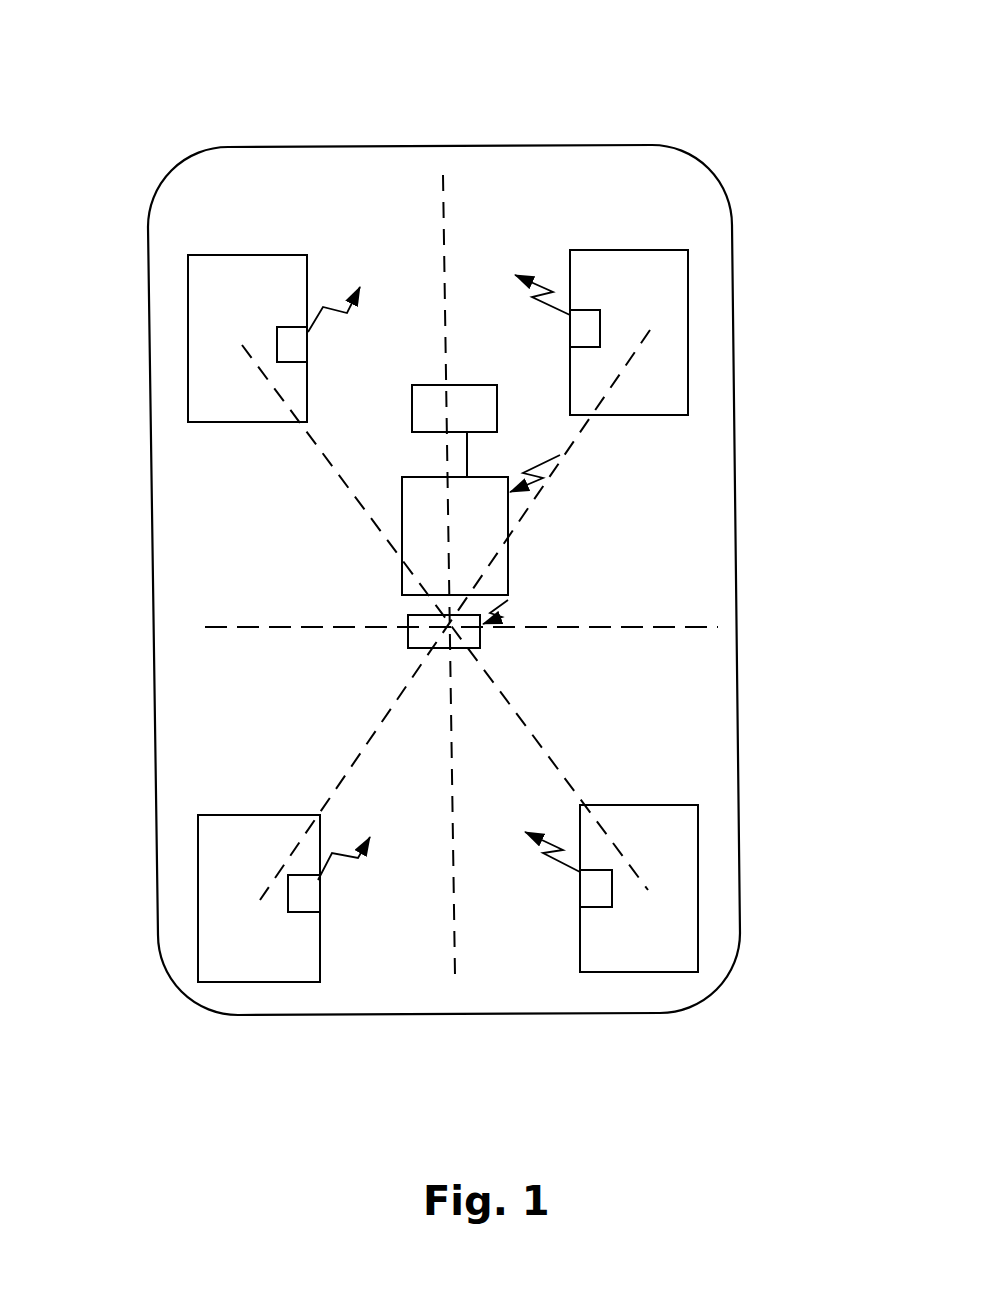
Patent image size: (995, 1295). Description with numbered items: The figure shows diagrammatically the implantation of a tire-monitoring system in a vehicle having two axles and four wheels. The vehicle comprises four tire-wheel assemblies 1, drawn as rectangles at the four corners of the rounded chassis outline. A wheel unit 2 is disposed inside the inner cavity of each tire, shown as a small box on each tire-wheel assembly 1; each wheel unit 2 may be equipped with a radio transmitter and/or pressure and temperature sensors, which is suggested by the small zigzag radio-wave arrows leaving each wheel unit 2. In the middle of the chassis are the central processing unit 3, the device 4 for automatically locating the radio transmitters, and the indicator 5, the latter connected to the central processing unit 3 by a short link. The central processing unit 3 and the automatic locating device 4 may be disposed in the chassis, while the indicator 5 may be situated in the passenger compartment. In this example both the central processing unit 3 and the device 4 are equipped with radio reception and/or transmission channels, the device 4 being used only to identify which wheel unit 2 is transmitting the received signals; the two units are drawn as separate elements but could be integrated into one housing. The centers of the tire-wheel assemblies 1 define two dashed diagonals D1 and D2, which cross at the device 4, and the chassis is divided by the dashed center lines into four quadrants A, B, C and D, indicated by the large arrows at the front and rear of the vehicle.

The tire-wheel assembly 1 is at (210, 273).
The wheel unit 2 is at (297, 352).
The central processing unit 3 is at (482, 543).
The device for automatically locating the radio transmitters 4 is at (467, 637).
The indicator 5 is at (467, 413).
The quadrant A is at (395, 240).
The quadrant B is at (548, 213).
The quadrant C is at (403, 872).
The quadrant D is at (525, 882).
The diagonal D1 is at (445, 617).
The diagonal D2 is at (455, 615).